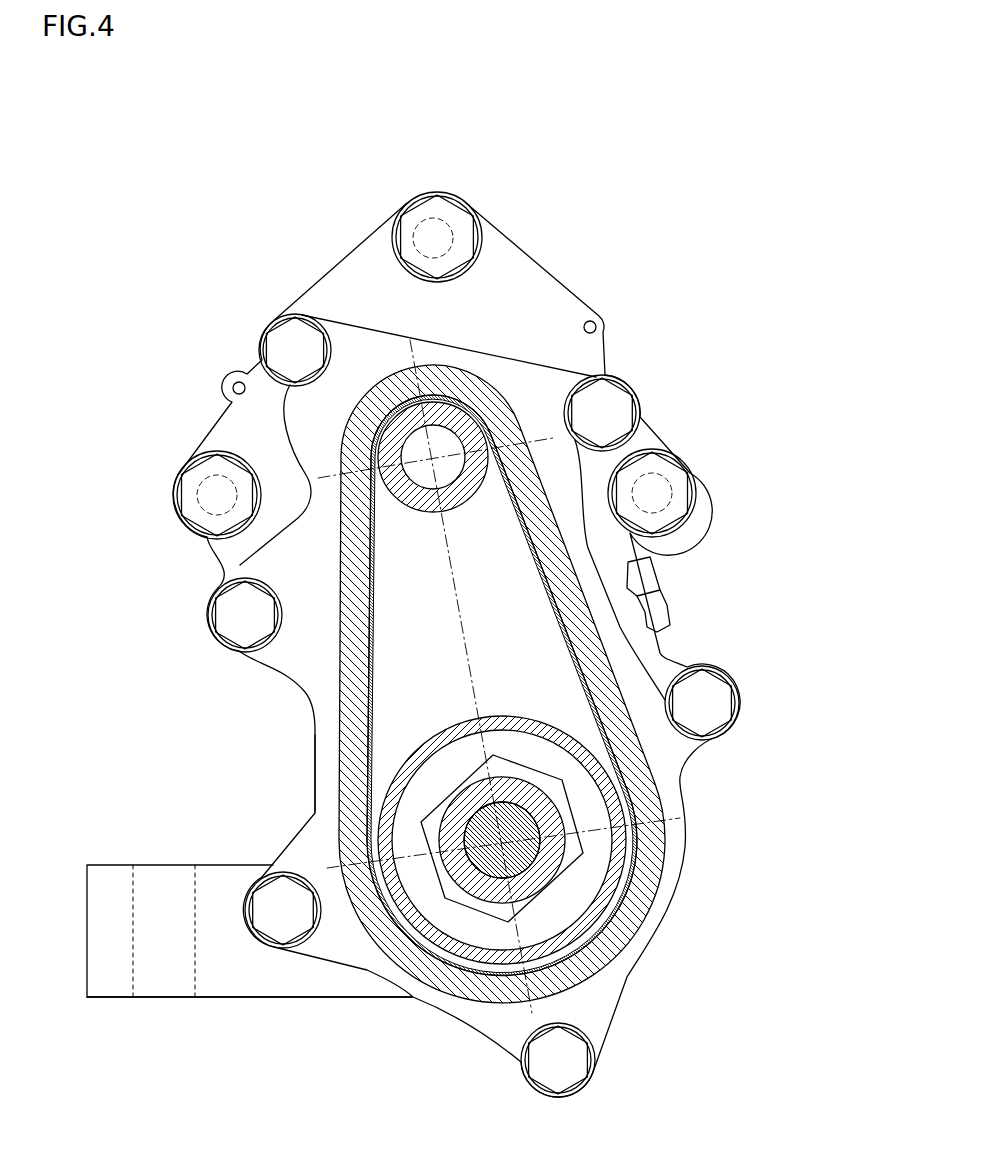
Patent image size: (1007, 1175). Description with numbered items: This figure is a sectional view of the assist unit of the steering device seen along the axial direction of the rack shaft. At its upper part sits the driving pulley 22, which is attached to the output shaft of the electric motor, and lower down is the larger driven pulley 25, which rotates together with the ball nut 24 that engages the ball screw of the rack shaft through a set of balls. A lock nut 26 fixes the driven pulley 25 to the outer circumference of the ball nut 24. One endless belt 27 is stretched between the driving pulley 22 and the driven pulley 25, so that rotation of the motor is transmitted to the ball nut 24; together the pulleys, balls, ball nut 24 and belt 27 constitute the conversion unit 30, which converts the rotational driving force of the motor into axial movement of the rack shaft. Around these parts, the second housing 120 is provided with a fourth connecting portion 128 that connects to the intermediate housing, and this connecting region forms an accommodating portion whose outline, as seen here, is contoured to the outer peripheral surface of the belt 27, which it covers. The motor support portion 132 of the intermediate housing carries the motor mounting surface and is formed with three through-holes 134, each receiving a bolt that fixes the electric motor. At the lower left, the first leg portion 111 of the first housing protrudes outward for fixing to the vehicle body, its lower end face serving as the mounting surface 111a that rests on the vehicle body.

The driving pulley 22 is at (462, 508).
The ball nut 24 is at (565, 800).
The driven pulley 25 is at (600, 735).
The lock nut 26 is at (556, 762).
The endless belt 27 is at (563, 592).
The conversion unit 30 is at (350, 712).
The first leg portion 111 is at (133, 865).
The mounting surface 111a is at (112, 1000).
The second housing 120 is at (500, 390).
The fourth connecting portion 128 is at (313, 780).
The motor support portion 132 is at (505, 252).
The through-holes 134 is at (440, 232).